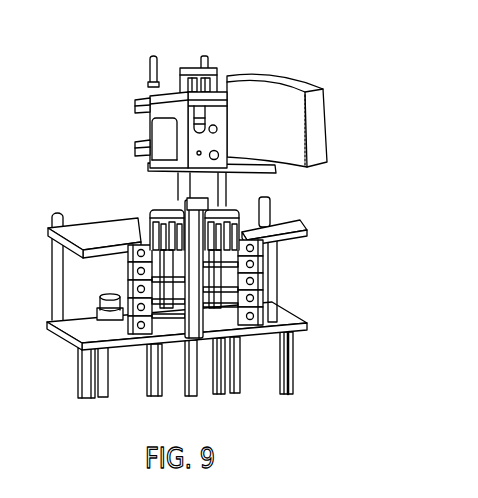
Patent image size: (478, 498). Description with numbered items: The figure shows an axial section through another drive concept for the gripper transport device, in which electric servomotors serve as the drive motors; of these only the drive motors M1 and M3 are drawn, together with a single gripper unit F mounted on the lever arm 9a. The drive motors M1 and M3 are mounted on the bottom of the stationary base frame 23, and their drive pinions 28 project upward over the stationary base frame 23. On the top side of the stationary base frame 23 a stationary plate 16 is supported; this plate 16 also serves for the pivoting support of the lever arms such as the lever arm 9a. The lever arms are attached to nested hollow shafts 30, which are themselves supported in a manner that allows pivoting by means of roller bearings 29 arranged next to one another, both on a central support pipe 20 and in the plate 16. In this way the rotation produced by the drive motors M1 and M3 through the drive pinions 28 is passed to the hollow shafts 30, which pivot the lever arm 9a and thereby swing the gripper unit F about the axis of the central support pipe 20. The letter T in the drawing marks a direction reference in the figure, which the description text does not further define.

The transport direction T is at (3, 125).
The gripper unit F is at (284, 72).
The lever arm 9a is at (272, 170).
The stationary plate 16 is at (101, 234).
The nested hollow shafts 30 is at (170, 212).
The drive pinions 28 is at (99, 305).
The roller bearing 29 is at (263, 263).
The stationary base frame 23 is at (282, 318).
The drive motor M1 is at (69, 371).
The central support pipe 20 is at (217, 318).
The drive motor M3 is at (293, 356).